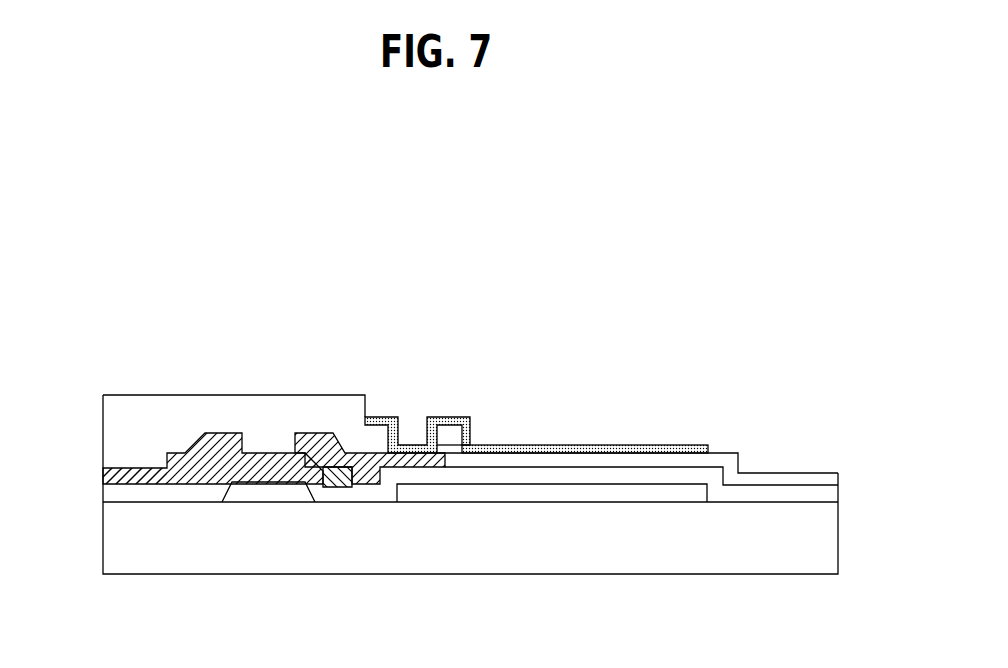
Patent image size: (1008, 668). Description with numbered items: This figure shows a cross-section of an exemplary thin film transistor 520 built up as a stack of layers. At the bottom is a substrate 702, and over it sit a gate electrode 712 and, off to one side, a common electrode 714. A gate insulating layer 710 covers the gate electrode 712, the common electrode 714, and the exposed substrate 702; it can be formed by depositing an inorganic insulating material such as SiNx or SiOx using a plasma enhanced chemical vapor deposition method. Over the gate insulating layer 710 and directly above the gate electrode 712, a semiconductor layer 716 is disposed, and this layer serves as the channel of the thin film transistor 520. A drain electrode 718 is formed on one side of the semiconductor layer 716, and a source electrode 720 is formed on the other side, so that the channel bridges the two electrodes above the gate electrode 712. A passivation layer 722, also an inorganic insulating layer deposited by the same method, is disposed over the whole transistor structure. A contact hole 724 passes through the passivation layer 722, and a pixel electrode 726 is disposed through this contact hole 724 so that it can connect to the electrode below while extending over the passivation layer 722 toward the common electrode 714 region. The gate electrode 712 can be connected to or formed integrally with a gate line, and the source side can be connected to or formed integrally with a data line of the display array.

The thin film transistor 520 is at (500, 323).
The substrate 702 is at (838, 535).
The gate insulating layer 710 is at (838, 493).
The gate electrode 712 is at (268, 493).
The common electrode 714 is at (598, 495).
The semiconductor layer 716 is at (345, 481).
The drain electrode 718 is at (103, 478).
The source electrode 720 is at (430, 456).
The passivation layer 722 is at (168, 403).
The contact hole 724 is at (411, 428).
The pixel electrode 726 is at (660, 445).